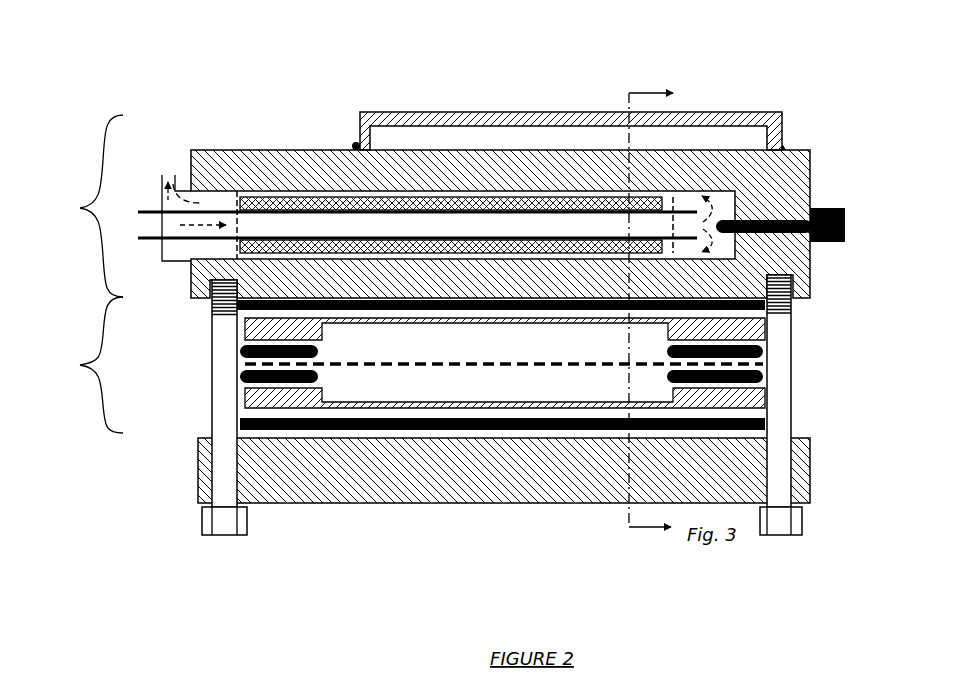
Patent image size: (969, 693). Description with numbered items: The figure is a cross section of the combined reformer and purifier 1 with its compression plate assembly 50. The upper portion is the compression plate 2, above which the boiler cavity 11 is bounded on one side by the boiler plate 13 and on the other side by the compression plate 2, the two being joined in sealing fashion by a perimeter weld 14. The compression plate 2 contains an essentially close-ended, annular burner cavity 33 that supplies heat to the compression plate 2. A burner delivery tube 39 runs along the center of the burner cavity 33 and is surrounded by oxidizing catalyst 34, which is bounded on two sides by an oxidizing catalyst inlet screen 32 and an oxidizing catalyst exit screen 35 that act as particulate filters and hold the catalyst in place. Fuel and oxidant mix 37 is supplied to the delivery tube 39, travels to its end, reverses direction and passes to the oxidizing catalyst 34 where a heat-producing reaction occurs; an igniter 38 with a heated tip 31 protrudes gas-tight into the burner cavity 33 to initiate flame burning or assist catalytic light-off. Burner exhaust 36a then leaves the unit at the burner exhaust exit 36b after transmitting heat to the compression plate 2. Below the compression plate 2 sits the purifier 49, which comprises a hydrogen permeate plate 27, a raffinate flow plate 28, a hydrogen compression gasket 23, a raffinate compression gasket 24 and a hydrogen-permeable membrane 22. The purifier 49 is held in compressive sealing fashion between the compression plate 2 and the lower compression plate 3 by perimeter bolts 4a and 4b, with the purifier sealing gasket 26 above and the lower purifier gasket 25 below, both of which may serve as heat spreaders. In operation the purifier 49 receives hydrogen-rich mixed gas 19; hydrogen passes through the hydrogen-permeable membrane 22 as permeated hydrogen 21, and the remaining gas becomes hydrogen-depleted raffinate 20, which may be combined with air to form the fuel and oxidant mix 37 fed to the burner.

The combined reformer and purifier 1 is at (189, 149).
The compression plate 2 is at (500, 224).
The lower compression plate 3 is at (504, 470).
The perimeter bolt 4a is at (209, 372).
The perimeter bolt 4b is at (797, 393).
The boiler cavity 11 is at (577, 136).
The boiler plate 13 is at (424, 110).
The perimeter weld 14 is at (349, 140).
The hydrogen-rich mixed gas 19 is at (652, 386).
The hydrogen-depleted raffinate 20 is at (352, 386).
The permeated hydrogen 21 is at (352, 346).
The hydrogen-permeable membrane 22 is at (383, 377).
The hydrogen compression gasket 23 is at (765, 350).
The raffinate compression gasket 24 is at (237, 390).
The lower purifier gasket 25 is at (343, 435).
The purifier sealing gasket 26 is at (433, 316).
The hydrogen permeate plate 27 is at (505, 335).
The raffinate flow plate 28 is at (583, 414).
The heated tip 31 is at (723, 208).
The oxidizing catalyst inlet screen 32 is at (667, 190).
The burner cavity 33 is at (525, 190).
The oxidizing catalyst 34 is at (400, 200).
The oxidizing catalyst exit screen 35 is at (240, 197).
The burner exhaust 36a is at (218, 188).
The burner exhaust exit 36b is at (163, 173).
The fuel and oxidant mix 37 is at (417, 225).
The igniter 38 is at (832, 206).
The burner delivery tube 39 is at (137, 212).
The purifier 49 is at (76, 365).
The compression plate assembly 50 is at (76, 208).